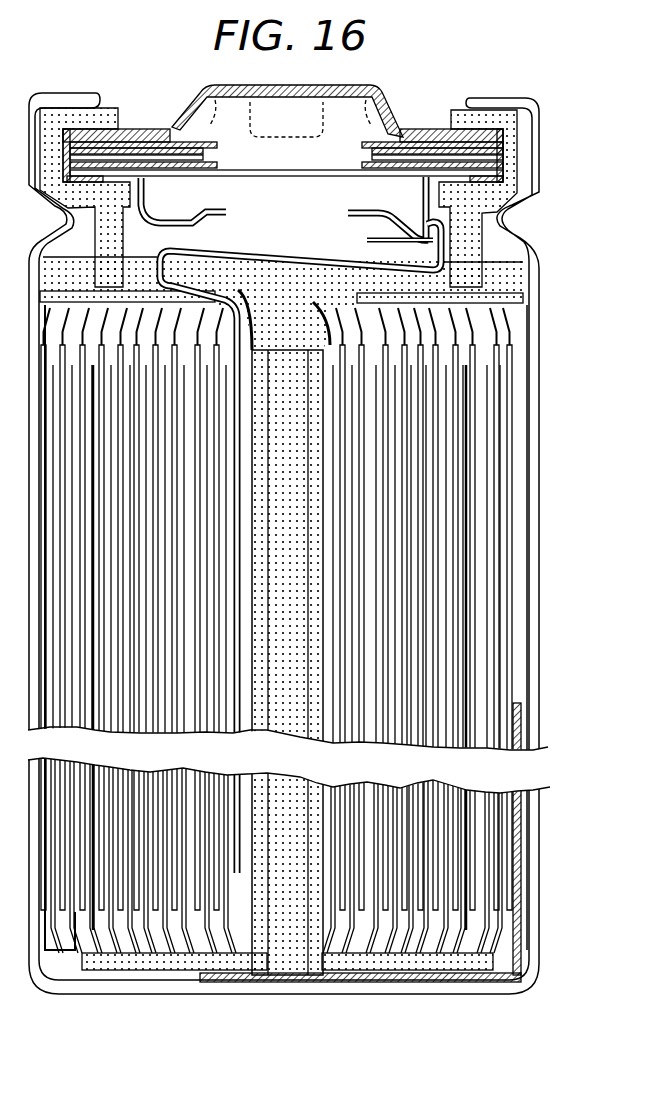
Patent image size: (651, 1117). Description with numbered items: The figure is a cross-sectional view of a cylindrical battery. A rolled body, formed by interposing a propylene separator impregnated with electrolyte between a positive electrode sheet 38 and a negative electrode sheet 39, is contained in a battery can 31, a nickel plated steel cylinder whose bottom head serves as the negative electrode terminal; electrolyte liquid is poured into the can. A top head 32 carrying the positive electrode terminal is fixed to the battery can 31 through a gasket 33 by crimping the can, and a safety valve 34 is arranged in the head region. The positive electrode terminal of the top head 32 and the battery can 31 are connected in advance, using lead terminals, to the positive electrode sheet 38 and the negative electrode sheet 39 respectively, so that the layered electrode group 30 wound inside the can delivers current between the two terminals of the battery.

The electrode group 30 is at (507, 513).
The battery can 31 is at (533, 562).
The top head 32 is at (368, 86).
The gasket 33 is at (515, 166).
The safety valve 34 is at (387, 178).
The positive electrode sheet 38 is at (502, 405).
The negative electrode 39 is at (513, 473).